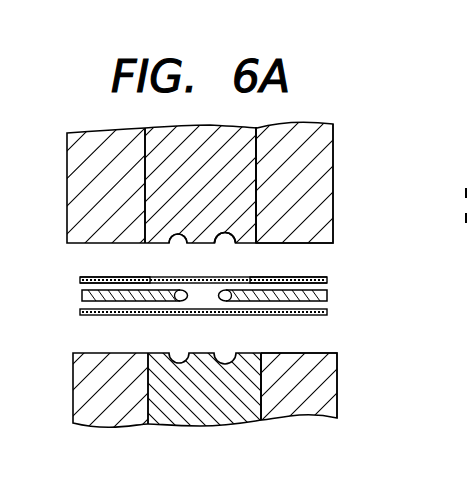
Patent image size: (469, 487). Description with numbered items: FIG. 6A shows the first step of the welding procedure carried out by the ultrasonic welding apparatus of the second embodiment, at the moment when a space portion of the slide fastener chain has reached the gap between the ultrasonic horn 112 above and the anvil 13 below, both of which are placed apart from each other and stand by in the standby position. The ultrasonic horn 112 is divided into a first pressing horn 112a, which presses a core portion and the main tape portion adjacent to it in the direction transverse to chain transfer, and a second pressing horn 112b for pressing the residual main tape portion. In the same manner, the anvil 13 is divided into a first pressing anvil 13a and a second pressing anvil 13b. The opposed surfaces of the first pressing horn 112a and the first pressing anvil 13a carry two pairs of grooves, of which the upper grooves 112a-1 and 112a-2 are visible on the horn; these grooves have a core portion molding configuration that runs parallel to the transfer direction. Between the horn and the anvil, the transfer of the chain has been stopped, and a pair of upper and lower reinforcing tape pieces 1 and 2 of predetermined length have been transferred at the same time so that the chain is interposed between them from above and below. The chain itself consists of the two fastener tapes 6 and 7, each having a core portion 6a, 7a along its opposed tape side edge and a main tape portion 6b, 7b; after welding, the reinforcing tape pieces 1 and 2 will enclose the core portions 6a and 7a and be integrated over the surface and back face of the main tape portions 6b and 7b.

The ultrasonic horn 112 is at (408, 138).
The first pressing horn 112a is at (222, 155).
The second pressing horn 112b is at (320, 190).
The groove 112a-1 is at (185, 245).
The groove 112a-2 is at (222, 245).
The reinforcing tape piece 1 is at (228, 277).
The reinforcing tape piece 2 is at (226, 315).
The fastener tape 6 is at (28, 262).
The core portion 6a is at (85, 286).
The main tape portion 6b is at (83, 296).
The fastener tape 7 is at (390, 255).
The core portion 7a is at (235, 286).
The main tape portion 7b is at (328, 296).
The anvil 13 is at (405, 353).
The first pressing anvil 13a is at (232, 371).
The second pressing anvil 13b is at (325, 401).